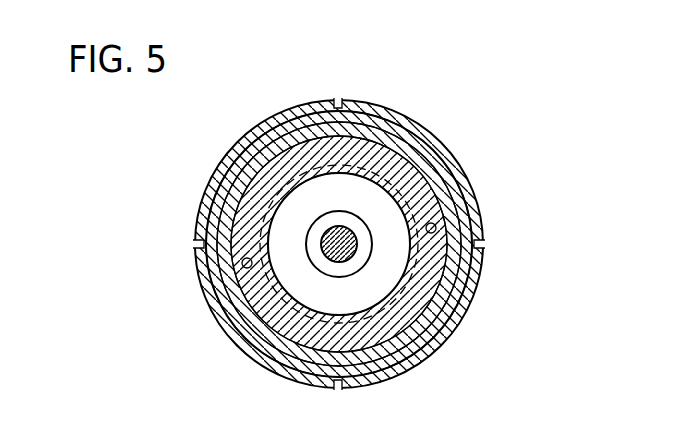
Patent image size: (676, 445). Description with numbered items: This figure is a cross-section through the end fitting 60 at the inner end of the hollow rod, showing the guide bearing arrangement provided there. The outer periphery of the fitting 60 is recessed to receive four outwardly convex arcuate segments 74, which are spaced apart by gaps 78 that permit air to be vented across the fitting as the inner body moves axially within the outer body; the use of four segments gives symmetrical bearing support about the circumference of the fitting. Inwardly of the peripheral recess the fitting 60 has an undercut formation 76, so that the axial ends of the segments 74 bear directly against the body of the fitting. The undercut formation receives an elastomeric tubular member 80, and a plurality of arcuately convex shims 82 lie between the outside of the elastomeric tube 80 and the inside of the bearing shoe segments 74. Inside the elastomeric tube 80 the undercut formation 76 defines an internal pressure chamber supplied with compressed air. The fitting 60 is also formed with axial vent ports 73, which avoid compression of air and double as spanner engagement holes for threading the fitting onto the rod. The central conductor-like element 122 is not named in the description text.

The end fitting 60 is at (360, 203).
The axial vent ports 73 is at (443, 206).
The arcuate segments 74 is at (247, 133).
The undercut formation 76 is at (378, 337).
The gaps 78 is at (340, 101).
The elastomeric tubular member 80 is at (417, 304).
The arcuately convex shims 82 is at (440, 305).
The center conductor 122 is at (352, 234).